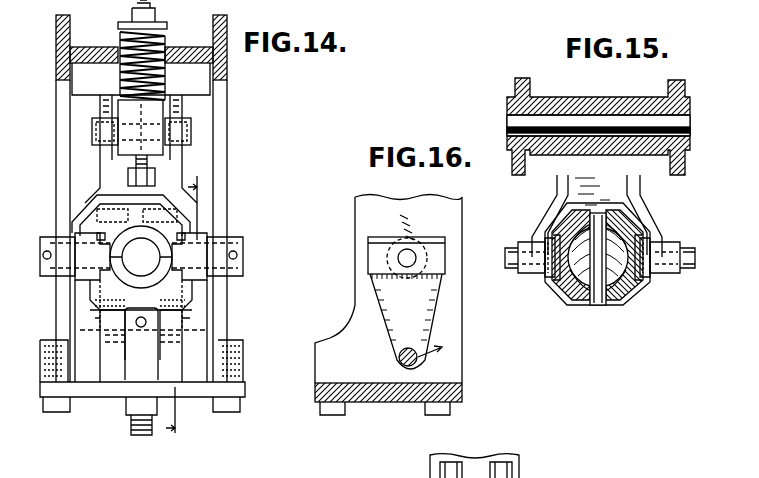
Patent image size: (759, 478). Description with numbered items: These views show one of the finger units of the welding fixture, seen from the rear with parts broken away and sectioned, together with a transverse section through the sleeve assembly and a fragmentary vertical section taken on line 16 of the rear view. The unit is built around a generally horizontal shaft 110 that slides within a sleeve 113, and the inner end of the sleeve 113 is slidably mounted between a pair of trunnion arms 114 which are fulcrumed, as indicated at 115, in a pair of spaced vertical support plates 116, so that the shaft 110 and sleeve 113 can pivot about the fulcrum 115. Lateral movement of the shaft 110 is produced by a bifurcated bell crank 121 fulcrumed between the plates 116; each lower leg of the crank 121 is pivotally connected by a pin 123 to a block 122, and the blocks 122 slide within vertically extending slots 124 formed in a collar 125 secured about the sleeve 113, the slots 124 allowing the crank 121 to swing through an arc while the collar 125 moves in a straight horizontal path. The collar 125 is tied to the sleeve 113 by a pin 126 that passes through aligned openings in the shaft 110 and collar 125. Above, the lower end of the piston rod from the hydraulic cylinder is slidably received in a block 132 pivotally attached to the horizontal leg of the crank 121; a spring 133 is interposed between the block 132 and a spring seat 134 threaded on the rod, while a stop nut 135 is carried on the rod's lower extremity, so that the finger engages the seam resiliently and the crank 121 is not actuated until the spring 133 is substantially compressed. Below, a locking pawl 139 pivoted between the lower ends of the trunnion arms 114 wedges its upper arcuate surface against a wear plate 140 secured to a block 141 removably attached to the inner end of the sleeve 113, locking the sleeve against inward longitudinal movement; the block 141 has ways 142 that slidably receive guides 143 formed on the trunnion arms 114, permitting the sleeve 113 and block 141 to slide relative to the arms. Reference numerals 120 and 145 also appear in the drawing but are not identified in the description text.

In FIG. 14, the section line 16— 16 is at (187, 305).
In FIG. 14, the shaft 110 is at (125, 240).
In FIG. 15, the shaft 110 is at (625, 236).
In FIG. 14, the sleeve 113 is at (163, 241).
In FIG. 15, the sleeve 113 is at (615, 272).
In FIG. 14, the trunnion arms 114 is at (85, 304).
In FIG. 16, the trunnion arms 114 is at (380, 295).
In FIG. 14, the fulcrum 115 is at (40, 252).
In FIG. 16, the fulcrum 115 is at (398, 258).
In FIG. 14, the vertical support plates 116 is at (56, 168).
In FIG. 16, the vertical support plates 116 is at (462, 329).
In FIG. 15, the vertical support plates 116 is at (512, 95).
In FIG. 14, the stud 120 is at (148, 165).
In FIG. 14, the bifurcated bell crank 121 is at (220, 161).
In FIG. 15, the bifurcated bell crank 121 is at (557, 186).
In FIG. 15, the block 122 is at (653, 246).
In FIG. 15, the pin 123 is at (695, 258).
In FIG. 15, the vertically extending slots 124 is at (556, 285).
In FIG. 15, the collar 125 is at (616, 305).
In FIG. 15, the pin 126 is at (597, 305).
In FIG. 14, the block 132 is at (158, 112).
In FIG. 14, the spring 133 is at (165, 50).
In FIG. 14, the spring seat 134 is at (118, 24).
In FIG. 14, the stop nut 135 is at (128, 177).
In FIG. 14, the locking pawl 139 is at (125, 333).
In FIG. 14, the wear plate 140 is at (125, 318).
In FIG. 14, the block 141 is at (95, 290).
In FIG. 14, the ways 142 is at (141, 257).
In FIG. 14, the guides 143 is at (190, 252).
In FIG. 16, the guides 143 is at (375, 265).
In FIG. 14, the hole 145 is at (142, 318).